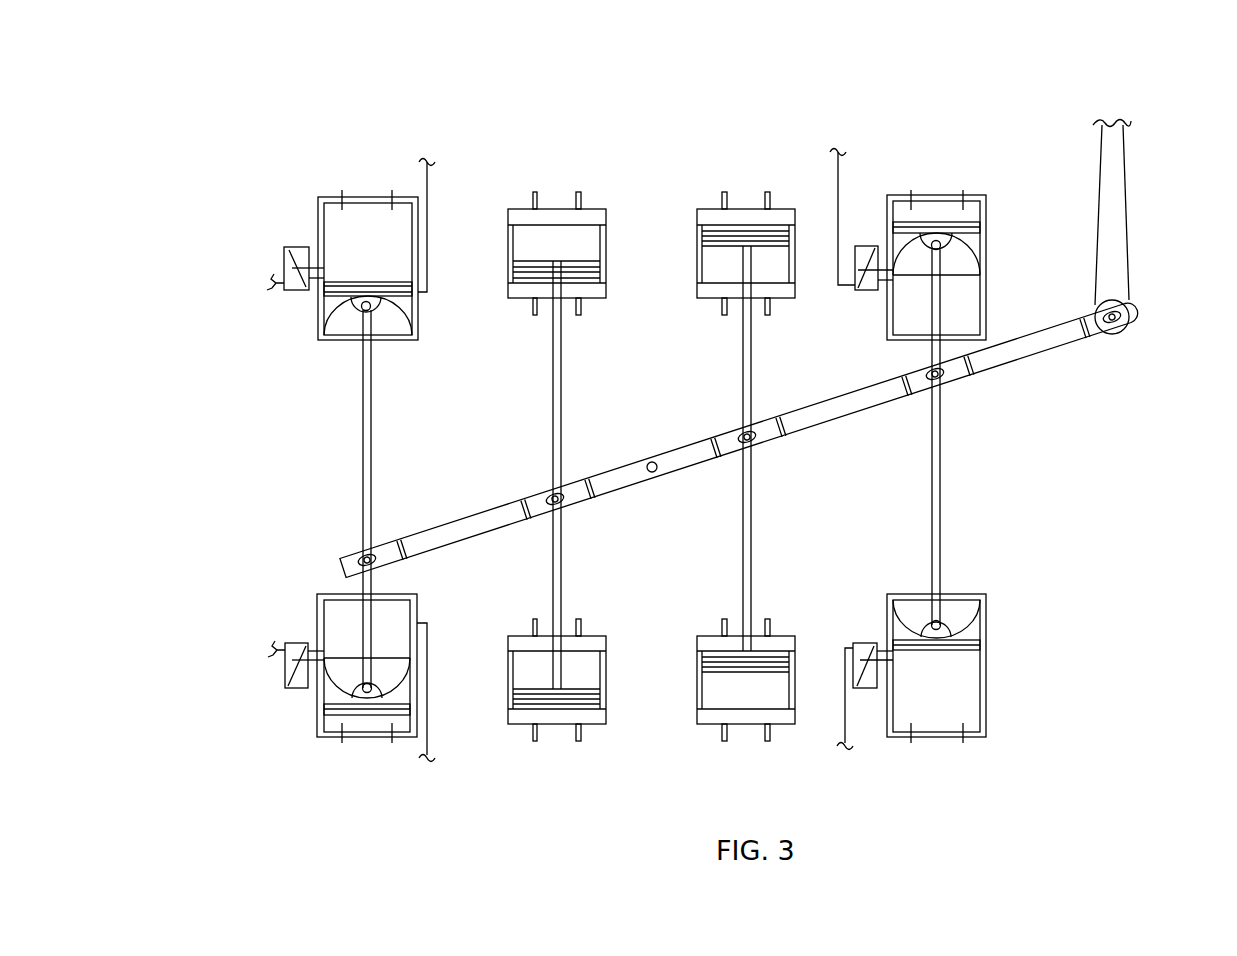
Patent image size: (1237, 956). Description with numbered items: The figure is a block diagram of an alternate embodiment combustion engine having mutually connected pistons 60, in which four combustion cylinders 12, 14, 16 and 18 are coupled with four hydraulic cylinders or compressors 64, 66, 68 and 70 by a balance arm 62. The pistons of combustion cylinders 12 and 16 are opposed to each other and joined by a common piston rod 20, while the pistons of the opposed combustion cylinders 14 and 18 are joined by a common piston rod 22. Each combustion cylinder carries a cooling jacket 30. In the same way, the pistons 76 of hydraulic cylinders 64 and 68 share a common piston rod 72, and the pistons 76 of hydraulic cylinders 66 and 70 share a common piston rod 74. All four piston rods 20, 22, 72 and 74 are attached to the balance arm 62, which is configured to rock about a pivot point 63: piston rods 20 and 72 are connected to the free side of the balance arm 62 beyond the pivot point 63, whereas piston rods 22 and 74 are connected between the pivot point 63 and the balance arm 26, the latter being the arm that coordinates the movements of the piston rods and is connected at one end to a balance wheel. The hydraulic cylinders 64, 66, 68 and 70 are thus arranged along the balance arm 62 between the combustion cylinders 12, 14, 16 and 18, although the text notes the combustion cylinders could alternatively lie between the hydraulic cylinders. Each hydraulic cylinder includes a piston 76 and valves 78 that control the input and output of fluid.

The combustion engine having mutually connected pistons 60 is at (442, 102).
The combustion cylinder 12 is at (347, 241).
The combustion cylinder 14 is at (970, 211).
The combustion cylinder 16 is at (334, 722).
The combustion cylinder 18 is at (958, 694).
The common piston rod 20 is at (363, 403).
The common piston rod 22 is at (942, 491).
The balance arm 26 is at (1128, 197).
The cooling jacket 30 is at (318, 221).
The balance arm 62 is at (681, 453).
The pivot point 63 is at (654, 472).
The hydraulic cylinder 64 is at (594, 209).
The hydraulic cylinder 66 is at (783, 209).
The hydraulic cylinder 68 is at (520, 724).
The hydraulic cylinder 70 is at (712, 724).
The common piston rod 72 is at (551, 432).
The common piston rod 74 is at (753, 523).
The piston 76 is at (580, 263).
The valve 78 is at (578, 192).